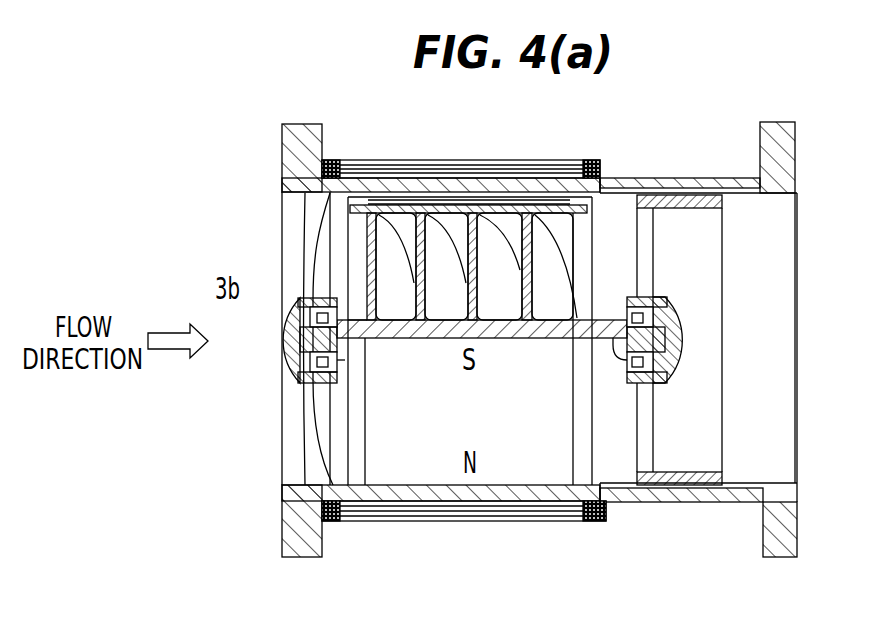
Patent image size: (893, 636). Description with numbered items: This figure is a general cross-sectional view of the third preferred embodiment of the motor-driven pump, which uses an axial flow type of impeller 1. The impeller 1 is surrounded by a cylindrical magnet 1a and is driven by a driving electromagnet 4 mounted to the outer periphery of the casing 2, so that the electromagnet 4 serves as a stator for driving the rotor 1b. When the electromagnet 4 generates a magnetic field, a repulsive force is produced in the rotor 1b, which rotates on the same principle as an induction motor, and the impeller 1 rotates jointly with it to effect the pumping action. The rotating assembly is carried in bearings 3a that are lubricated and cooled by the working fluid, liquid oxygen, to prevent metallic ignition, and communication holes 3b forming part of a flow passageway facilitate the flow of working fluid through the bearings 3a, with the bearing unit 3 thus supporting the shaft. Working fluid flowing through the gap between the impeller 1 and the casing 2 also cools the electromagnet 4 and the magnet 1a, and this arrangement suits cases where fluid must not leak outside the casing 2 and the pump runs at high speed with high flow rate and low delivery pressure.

The impeller 1 is at (503, 250).
The cylindrical magnet 1a is at (497, 200).
The rotor 1b is at (433, 465).
The casing 2 is at (280, 148).
The bearing unit 3 is at (679, 383).
The bearing 3a is at (668, 297).
The communication hole 3b is at (688, 317).
The electromagnet 4 is at (373, 160).